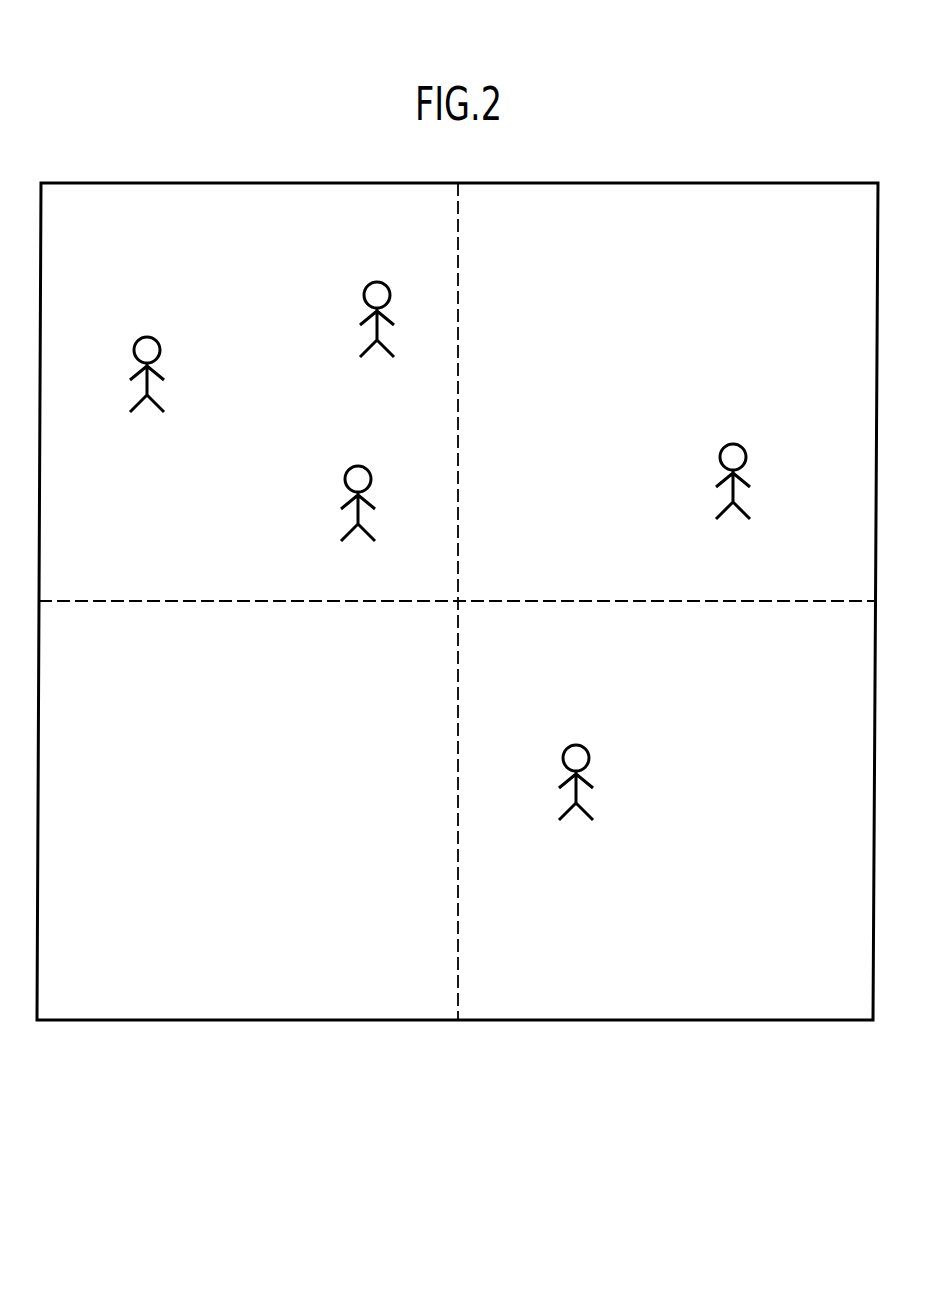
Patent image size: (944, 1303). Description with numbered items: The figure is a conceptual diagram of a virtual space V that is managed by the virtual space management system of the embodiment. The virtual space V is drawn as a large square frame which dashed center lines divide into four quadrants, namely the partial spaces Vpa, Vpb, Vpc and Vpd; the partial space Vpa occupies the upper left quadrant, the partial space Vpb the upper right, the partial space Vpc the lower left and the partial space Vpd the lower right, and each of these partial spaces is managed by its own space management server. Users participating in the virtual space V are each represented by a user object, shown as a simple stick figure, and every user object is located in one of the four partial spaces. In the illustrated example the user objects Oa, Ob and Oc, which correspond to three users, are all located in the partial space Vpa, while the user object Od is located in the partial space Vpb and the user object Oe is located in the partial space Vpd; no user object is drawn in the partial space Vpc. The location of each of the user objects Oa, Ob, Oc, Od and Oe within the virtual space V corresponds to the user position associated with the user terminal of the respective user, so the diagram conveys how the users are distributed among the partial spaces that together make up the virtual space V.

The virtual space V is at (455, 1040).
The partial space Vpa is at (141, 241).
The partial space Vpb is at (829, 241).
The partial space Vpc is at (135, 989).
The partial space Vpd is at (826, 989).
The user object Oa is at (160, 348).
The user object Ob is at (345, 477).
The user object Oc is at (364, 292).
The user object Od is at (720, 455).
The user object Oe is at (589, 756).